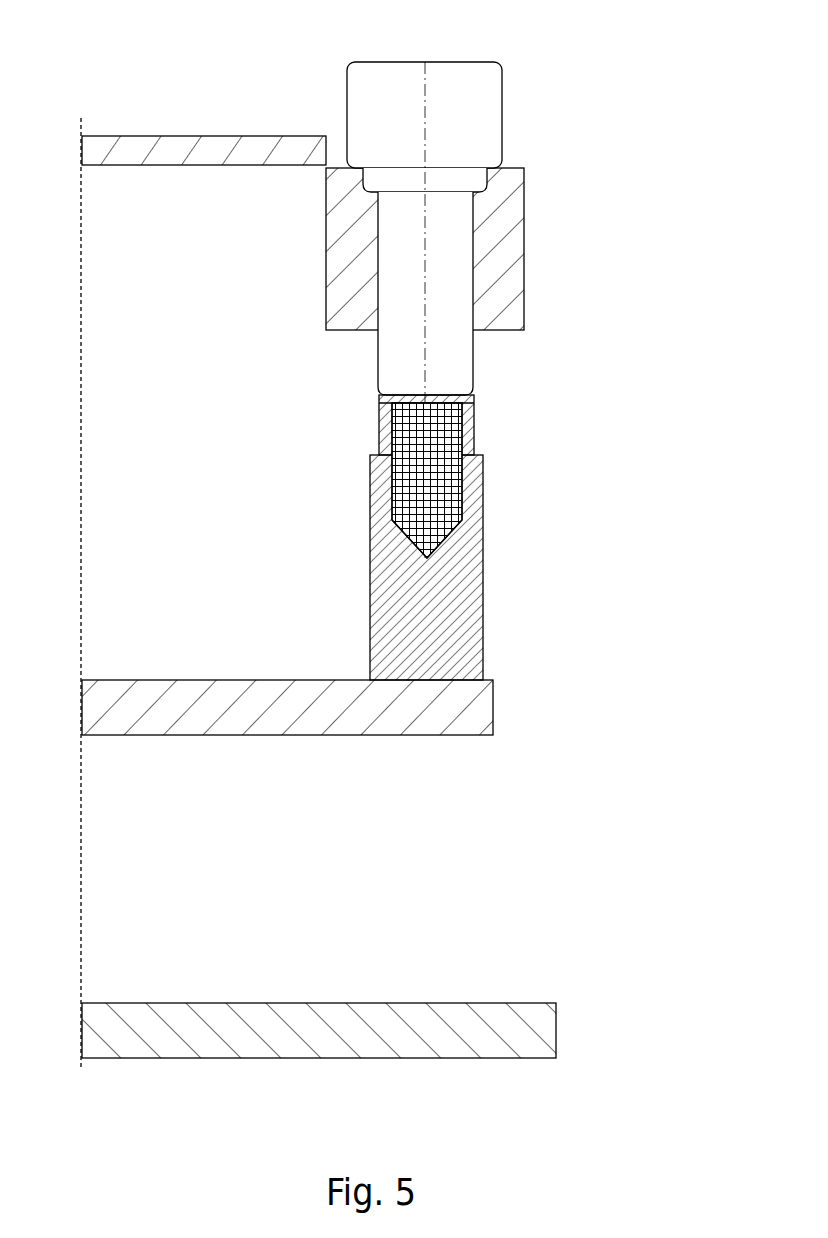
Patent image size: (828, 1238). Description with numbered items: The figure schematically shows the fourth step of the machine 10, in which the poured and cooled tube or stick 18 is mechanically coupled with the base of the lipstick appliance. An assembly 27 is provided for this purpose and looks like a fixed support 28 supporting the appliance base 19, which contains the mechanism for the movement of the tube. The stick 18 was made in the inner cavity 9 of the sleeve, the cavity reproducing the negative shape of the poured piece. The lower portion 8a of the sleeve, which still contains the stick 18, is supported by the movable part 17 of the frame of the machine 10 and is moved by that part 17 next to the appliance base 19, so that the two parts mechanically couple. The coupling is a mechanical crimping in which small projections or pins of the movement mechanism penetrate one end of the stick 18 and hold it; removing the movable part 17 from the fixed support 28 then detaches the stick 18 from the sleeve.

The appliance base 19 is at (502, 92).
The assembly 27 is at (515, 175).
The machine 10 is at (588, 242).
The fixed support 28 is at (524, 283).
The tube or stick 18 is at (473, 418).
The inner cavity 9 is at (440, 497).
The lower portion 8a is at (453, 603).
The movable part 17 is at (453, 703).